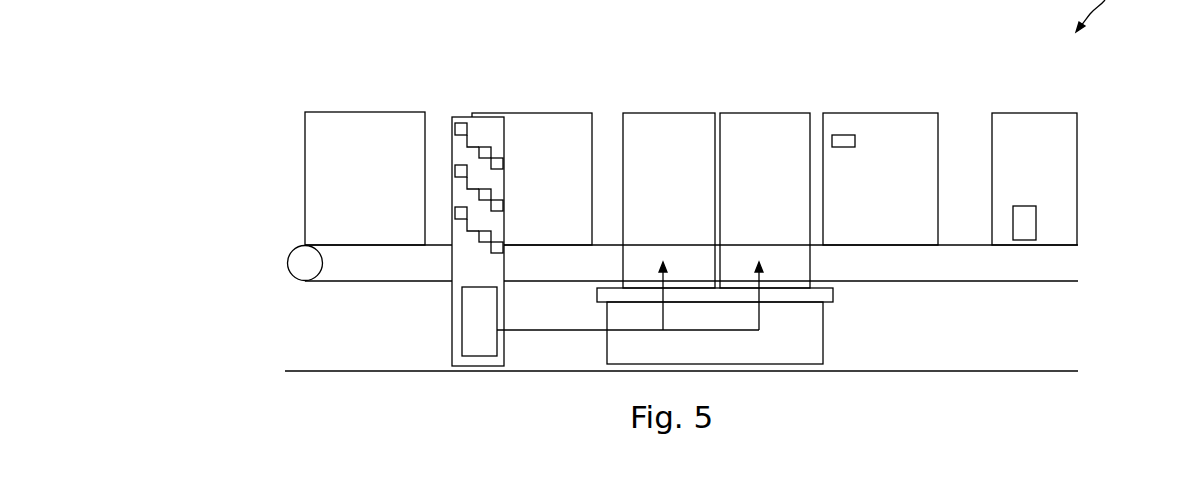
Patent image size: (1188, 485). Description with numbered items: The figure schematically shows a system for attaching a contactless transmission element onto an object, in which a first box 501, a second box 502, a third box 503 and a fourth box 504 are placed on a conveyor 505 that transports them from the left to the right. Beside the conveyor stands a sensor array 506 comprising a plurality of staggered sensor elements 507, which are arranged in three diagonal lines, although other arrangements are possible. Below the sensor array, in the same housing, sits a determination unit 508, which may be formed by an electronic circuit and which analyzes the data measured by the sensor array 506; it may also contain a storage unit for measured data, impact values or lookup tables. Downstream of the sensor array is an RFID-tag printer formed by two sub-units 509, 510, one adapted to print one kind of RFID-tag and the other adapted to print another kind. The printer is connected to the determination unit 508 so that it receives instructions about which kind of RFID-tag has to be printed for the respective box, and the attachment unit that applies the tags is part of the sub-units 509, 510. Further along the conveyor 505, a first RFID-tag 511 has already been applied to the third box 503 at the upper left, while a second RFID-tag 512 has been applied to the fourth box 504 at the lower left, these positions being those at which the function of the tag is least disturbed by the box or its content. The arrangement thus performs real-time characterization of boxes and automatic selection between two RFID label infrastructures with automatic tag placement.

The first box 501 is at (365, 112).
The second box 502 is at (557, 113).
The third box 503 is at (879, 113).
The fourth box 504 is at (1033, 113).
The conveyor 505 is at (887, 284).
The sensor array 506 is at (460, 117).
The sensor elements 507 is at (474, 222).
The determination unit 508 is at (462, 318).
The sub-unit 509 is at (670, 113).
The sub-unit 510 is at (768, 113).
The first RFID-tag 511 is at (841, 135).
The second RFID-tag 512 is at (1021, 206).